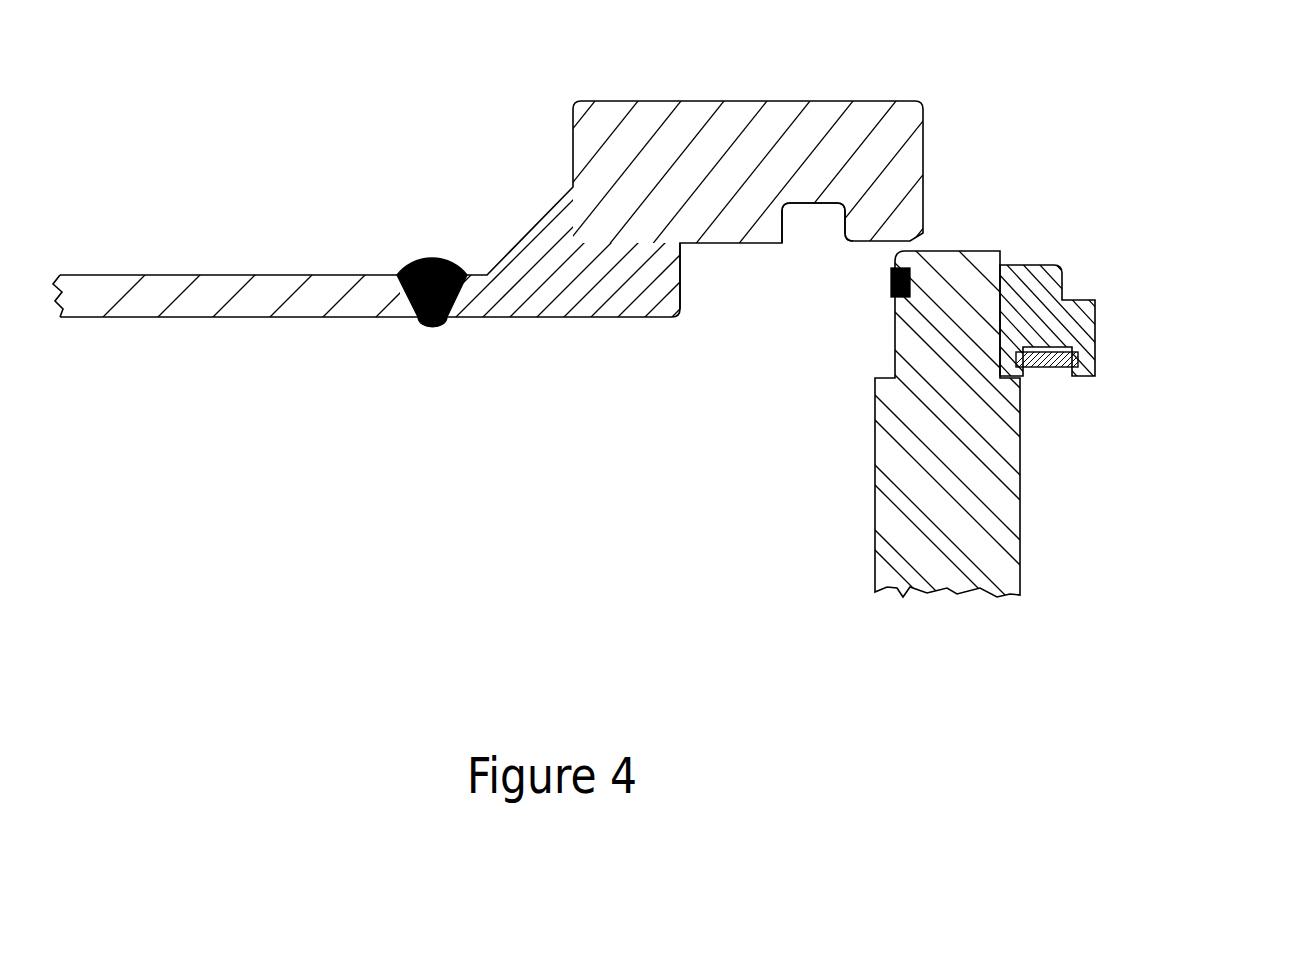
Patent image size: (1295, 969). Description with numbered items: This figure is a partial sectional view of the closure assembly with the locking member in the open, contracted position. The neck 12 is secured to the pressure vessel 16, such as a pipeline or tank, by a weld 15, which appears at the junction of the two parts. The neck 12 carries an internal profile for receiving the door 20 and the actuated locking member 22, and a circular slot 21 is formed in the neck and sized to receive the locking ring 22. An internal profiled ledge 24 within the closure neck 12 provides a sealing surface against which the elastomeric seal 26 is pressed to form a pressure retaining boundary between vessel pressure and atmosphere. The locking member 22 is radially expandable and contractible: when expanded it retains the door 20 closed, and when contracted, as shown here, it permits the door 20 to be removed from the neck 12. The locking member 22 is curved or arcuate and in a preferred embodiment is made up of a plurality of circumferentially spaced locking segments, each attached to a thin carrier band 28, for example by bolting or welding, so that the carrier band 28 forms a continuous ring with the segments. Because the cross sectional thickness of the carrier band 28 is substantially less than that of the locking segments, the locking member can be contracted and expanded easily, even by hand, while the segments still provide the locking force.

The neck 12 is at (667, 140).
The weld 15 is at (437, 250).
The pressure vessel 16 is at (257, 297).
The door 20 is at (900, 563).
The circular slot 21 is at (811, 222).
The locking member 22 is at (1050, 293).
The internal profiled ledge 24 is at (680, 293).
The elastomeric seal 26 is at (889, 290).
The carrier band 28 is at (1045, 367).